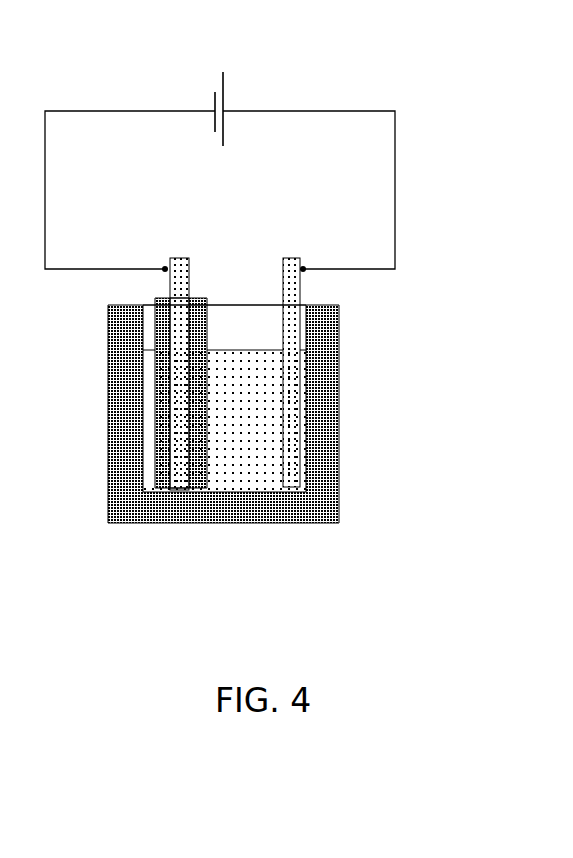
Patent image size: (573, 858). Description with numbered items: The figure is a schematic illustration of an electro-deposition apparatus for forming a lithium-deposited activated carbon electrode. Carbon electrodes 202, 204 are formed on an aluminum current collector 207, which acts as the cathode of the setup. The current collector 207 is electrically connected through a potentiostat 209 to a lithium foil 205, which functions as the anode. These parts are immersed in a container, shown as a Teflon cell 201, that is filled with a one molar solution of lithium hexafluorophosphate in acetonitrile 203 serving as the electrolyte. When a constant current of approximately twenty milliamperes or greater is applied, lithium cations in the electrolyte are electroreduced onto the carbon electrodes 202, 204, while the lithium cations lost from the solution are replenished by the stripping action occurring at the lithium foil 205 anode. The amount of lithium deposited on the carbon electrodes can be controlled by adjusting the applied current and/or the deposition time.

The Teflon cell 201 is at (339, 335).
The carbon electrode 202 is at (160, 490).
The acetonitrile solution of lithium hexafluorophosphate 203 is at (339, 375).
The carbon electrode 204 is at (200, 483).
The lithium foil 205 is at (300, 432).
The aluminum current collector 207 is at (200, 448).
The potentiostat 209 is at (220, 146).